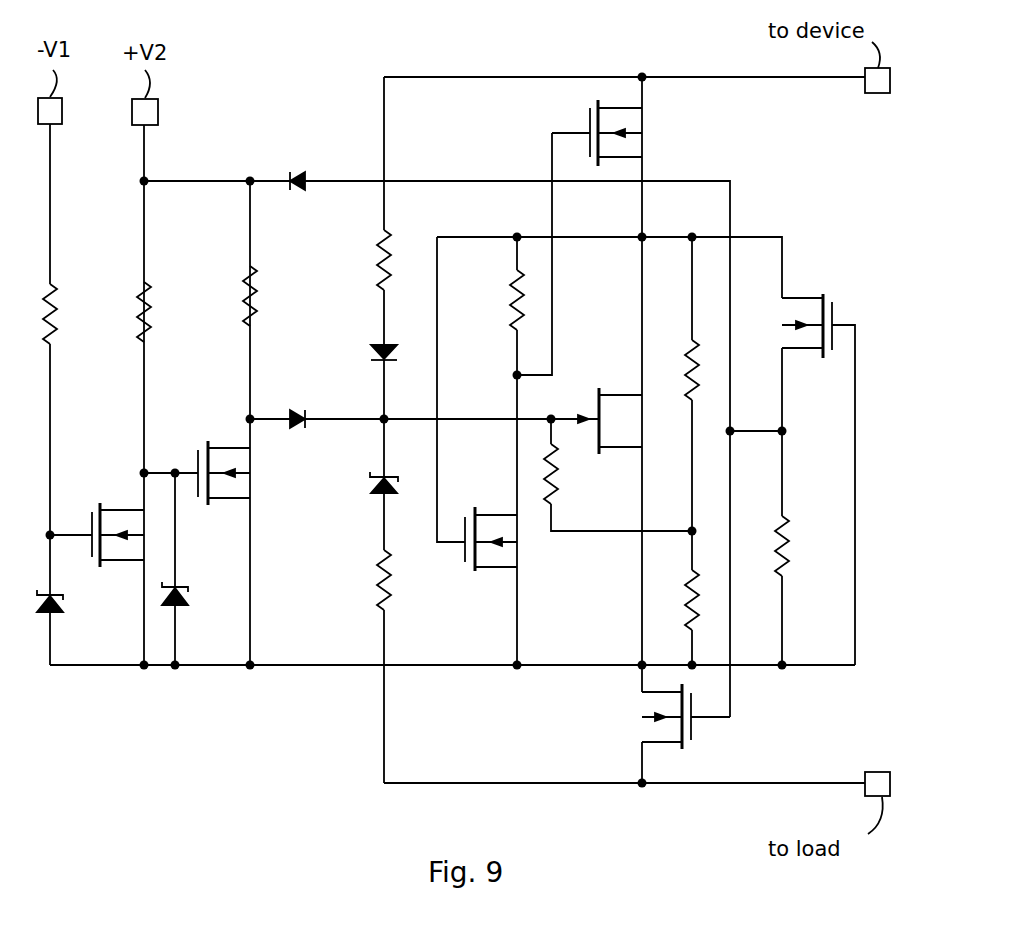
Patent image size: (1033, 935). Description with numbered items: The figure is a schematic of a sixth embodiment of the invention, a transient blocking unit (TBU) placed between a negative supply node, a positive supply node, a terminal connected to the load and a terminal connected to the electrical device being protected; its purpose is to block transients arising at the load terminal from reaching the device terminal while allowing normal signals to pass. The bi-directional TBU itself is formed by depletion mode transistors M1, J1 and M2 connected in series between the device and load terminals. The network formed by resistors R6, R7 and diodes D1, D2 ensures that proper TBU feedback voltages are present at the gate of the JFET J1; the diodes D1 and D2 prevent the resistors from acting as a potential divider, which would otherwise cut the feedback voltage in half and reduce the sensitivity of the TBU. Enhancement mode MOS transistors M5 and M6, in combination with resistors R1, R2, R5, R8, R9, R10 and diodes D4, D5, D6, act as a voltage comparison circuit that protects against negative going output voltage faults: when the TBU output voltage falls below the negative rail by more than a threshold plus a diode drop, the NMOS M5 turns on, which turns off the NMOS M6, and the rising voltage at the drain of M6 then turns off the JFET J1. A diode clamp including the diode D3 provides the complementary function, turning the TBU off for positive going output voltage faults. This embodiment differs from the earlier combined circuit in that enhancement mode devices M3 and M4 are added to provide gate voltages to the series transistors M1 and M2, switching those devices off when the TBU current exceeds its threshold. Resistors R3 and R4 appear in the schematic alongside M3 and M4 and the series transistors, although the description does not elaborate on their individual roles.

The resistor R1 is at (690, 352).
The resistor R2 is at (690, 603).
The resistor R3 is at (516, 312).
The resistor R4 is at (781, 562).
The resistor R5 is at (553, 472).
The resistor R6 is at (387, 258).
The resistor R7 is at (380, 577).
The resistor R8 is at (53, 310).
The resistor R9 is at (146, 305).
The resistor R10 is at (253, 295).
The diode D1 is at (372, 350).
The diode D2 is at (372, 488).
The diode D3 is at (297, 172).
The diode D4 is at (56, 610).
The diode D5 is at (180, 604).
The diode D6 is at (300, 408).
The depletion mode transistor M1 is at (598, 108).
The depletion mode transistor M2 is at (688, 745).
The enhancement mode device M3 is at (472, 573).
The enhancement mode device M4 is at (825, 297).
The enhancement mode MOS transistor M5 is at (100, 505).
The enhancement mode MOS transistor M6 is at (208, 443).
The depletion mode JFET transistor J1 is at (599, 398).